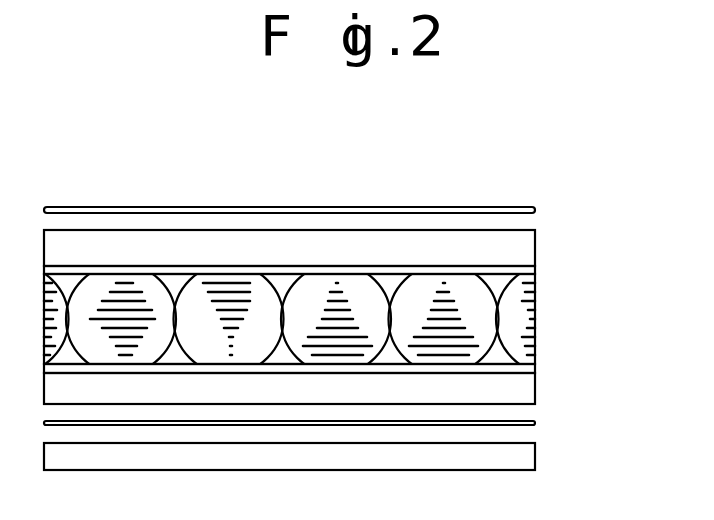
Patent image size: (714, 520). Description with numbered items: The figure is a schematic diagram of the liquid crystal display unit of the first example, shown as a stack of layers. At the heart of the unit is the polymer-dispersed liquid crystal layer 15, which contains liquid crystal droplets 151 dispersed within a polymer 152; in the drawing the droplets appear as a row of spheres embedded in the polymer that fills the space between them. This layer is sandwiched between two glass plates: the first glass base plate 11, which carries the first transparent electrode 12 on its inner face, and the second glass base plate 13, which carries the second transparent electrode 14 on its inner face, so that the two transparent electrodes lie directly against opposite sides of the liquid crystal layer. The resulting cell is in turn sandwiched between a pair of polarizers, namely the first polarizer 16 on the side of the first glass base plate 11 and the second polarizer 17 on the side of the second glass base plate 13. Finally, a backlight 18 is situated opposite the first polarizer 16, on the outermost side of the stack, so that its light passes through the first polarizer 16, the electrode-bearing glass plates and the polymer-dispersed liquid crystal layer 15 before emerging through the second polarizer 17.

The first glass base plate 11 is at (537, 390).
The first transparent electrode 12 is at (537, 364).
The second glass base plate 13 is at (537, 248).
The second transparent electrode 14 is at (537, 270).
The polymer-dispersed liquid crystal layer 15 is at (329, 256).
The liquid crystal droplet 151 is at (354, 285).
The polymer 152 is at (419, 211).
The first polarizer 16 is at (537, 422).
The second polarizer 17 is at (537, 210).
The backlight 18 is at (537, 454).